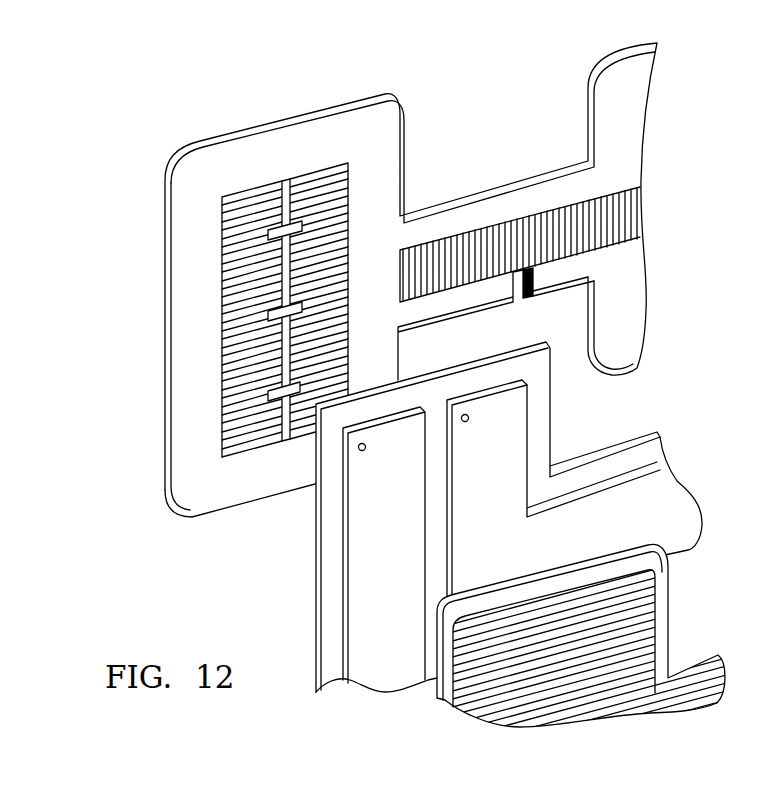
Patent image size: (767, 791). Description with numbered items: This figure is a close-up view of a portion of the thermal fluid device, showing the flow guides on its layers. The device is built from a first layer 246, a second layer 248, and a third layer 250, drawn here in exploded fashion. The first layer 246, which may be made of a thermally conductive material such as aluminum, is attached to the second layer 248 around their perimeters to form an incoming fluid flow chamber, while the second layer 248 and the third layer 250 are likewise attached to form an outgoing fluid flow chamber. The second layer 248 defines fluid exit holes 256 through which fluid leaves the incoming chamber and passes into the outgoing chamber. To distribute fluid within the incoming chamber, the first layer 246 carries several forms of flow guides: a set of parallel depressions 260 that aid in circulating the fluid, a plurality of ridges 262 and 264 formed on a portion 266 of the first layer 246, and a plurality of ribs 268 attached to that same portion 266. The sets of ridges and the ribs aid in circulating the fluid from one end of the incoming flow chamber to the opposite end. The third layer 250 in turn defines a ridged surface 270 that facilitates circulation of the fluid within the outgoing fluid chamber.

The first layer 246 is at (213, 140).
The second layer 248 is at (325, 578).
The third layer 250 is at (660, 590).
The fluid exit holes 256 is at (362, 452).
The parallel depressions 260 is at (487, 236).
The ridges 262 is at (338, 175).
The ridges 264 is at (252, 198).
The portion of the first layer 266 is at (288, 168).
The ribs 268 is at (270, 233).
The ridged surface 270 is at (627, 658).